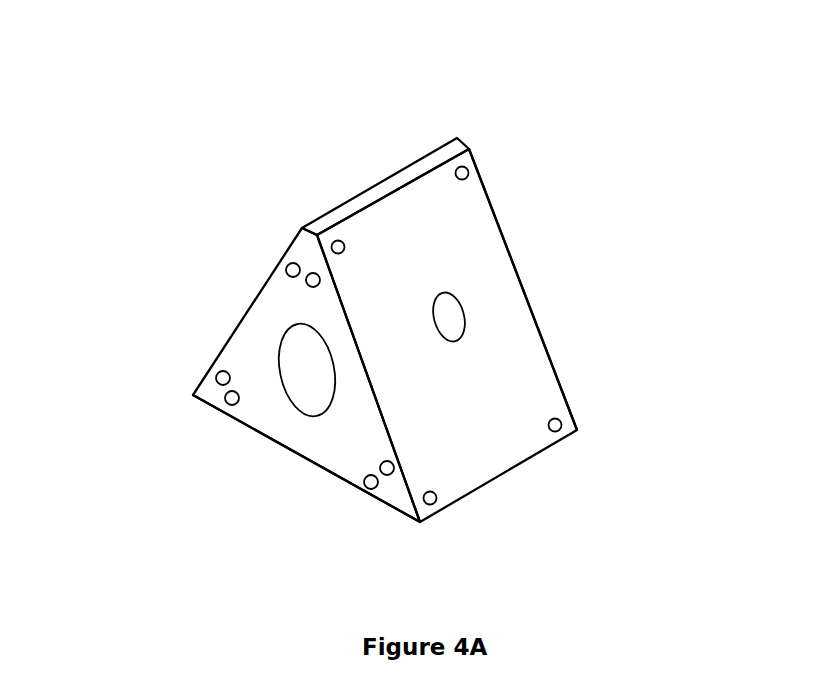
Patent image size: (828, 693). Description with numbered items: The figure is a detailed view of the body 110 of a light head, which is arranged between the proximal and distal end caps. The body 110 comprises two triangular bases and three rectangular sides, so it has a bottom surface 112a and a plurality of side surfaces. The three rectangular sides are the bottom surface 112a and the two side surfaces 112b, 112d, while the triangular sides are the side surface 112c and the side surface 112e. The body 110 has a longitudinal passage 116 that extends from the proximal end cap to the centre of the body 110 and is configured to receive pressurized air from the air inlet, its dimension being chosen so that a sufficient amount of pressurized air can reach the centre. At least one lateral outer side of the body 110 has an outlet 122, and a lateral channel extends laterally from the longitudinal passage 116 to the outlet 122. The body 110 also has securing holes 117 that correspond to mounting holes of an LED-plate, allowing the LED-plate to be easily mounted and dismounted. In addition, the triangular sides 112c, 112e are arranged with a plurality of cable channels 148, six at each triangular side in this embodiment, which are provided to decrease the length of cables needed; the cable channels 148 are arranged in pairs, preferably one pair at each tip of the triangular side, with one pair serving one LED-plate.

The body 110 is at (521, 94).
The bottom surface 112a is at (298, 454).
The side surface 112b is at (473, 447).
The side surface 112c is at (263, 343).
The side surface 112d is at (402, 172).
The side surface 112e is at (507, 240).
The longitudinal passage 116 is at (287, 360).
The securing holes 117 is at (323, 237).
The outlet 122 is at (448, 317).
The cable channels 148 is at (310, 272).